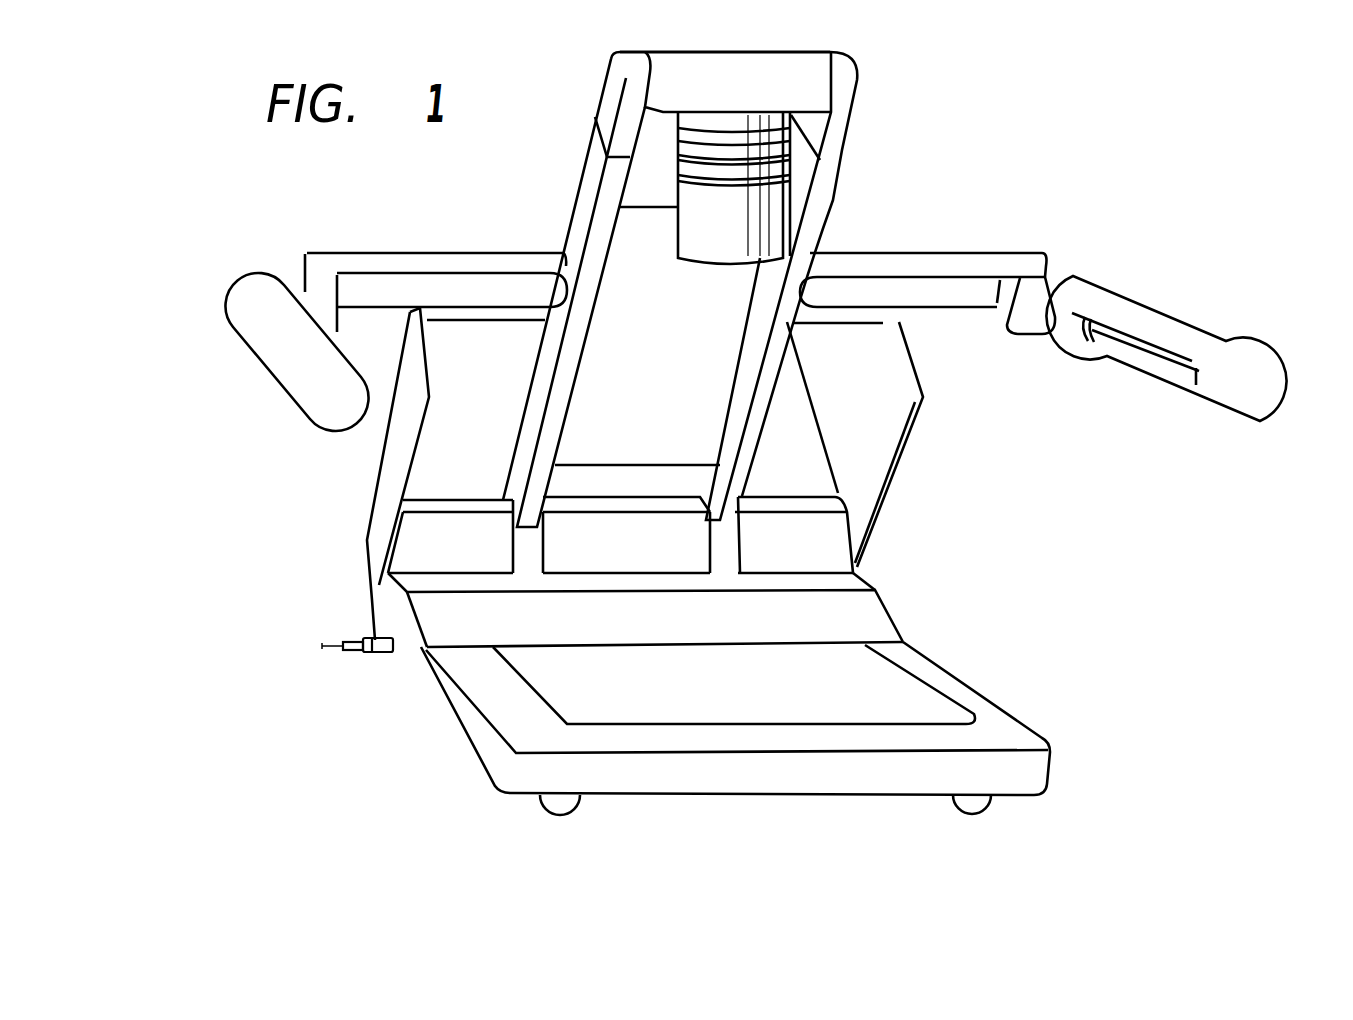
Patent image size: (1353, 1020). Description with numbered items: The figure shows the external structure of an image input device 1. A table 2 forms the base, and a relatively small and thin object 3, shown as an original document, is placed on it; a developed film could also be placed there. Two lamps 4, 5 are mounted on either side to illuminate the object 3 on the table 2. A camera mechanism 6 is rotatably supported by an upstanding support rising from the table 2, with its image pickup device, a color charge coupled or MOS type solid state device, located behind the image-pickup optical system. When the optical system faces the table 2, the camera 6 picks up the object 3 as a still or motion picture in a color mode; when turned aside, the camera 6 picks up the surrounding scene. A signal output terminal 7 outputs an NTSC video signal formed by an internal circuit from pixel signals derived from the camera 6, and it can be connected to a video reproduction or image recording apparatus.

The image input device 1 is at (930, 213).
The table 2 is at (957, 683).
The object 3 is at (738, 708).
The lamp 4 is at (282, 375).
The lamp 5 is at (1158, 355).
The camera mechanism 6 is at (713, 263).
The signal output terminal 7 is at (362, 637).